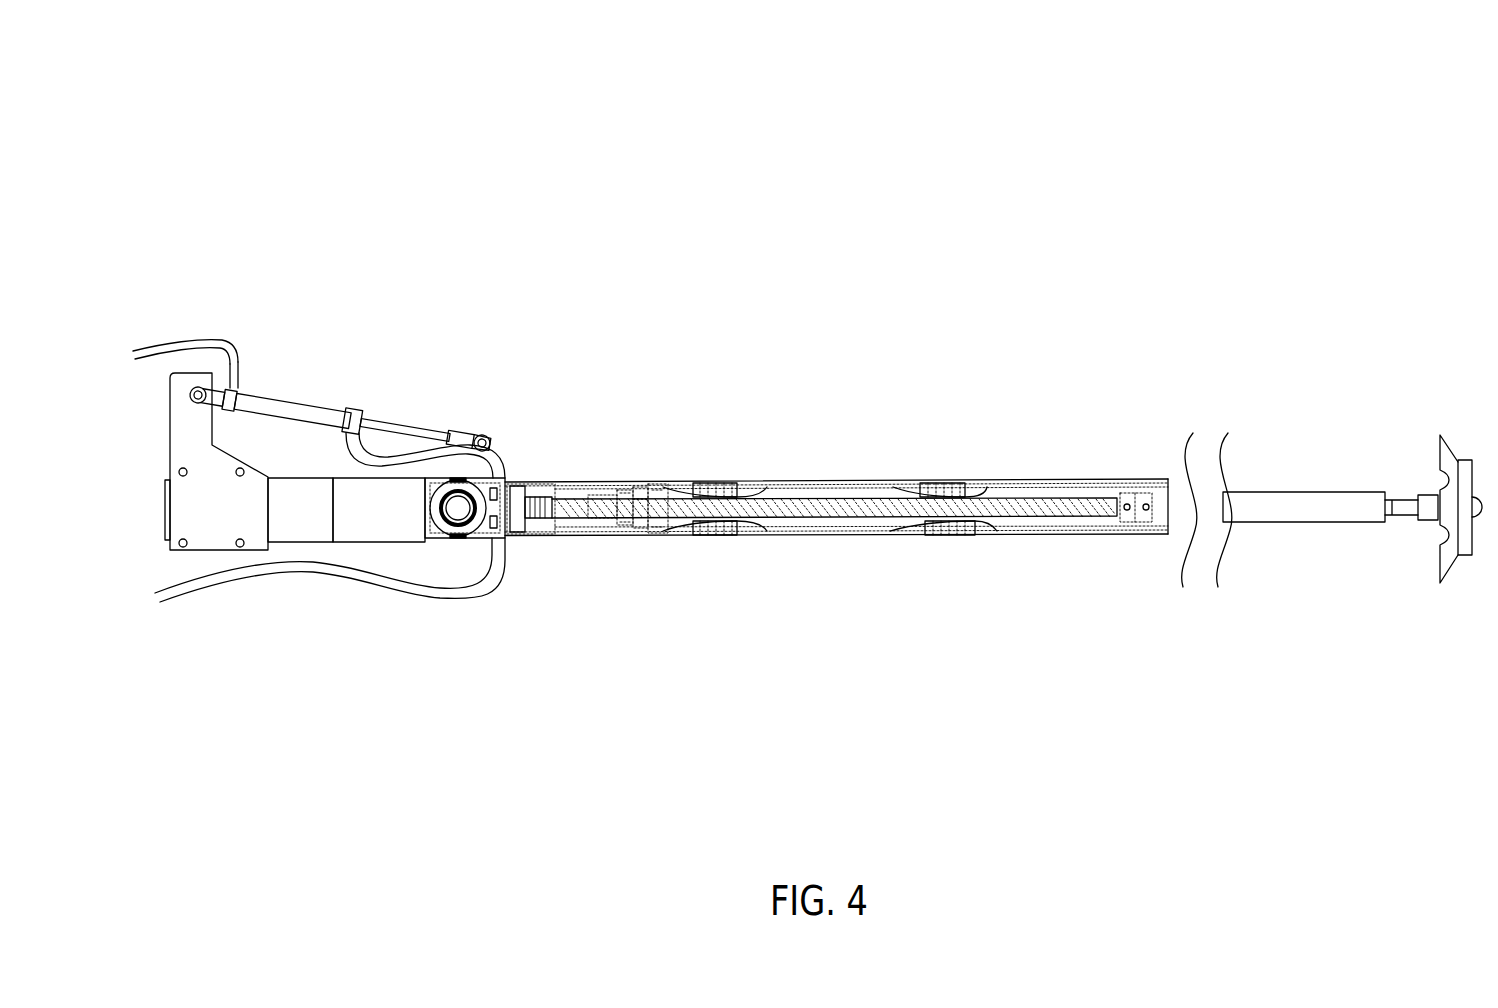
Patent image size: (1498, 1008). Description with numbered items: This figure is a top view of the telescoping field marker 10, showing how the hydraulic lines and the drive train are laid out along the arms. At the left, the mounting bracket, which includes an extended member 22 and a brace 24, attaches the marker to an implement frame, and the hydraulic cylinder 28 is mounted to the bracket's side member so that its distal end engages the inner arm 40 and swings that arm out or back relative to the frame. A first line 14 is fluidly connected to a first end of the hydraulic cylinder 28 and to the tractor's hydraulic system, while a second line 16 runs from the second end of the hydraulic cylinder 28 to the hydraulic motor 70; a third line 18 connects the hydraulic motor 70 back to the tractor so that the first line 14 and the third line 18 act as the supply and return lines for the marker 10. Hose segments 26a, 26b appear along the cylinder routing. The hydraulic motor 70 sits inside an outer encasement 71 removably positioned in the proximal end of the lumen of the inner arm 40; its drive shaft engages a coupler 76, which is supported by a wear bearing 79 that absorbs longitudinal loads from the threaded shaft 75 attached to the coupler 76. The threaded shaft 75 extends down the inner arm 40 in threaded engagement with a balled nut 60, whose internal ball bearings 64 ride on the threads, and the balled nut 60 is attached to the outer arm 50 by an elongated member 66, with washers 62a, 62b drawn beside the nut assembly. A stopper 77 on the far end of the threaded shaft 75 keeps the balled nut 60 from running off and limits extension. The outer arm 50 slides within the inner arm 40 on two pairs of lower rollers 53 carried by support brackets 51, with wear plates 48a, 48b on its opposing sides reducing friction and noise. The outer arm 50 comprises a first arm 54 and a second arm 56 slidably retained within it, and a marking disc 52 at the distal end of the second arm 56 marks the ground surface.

The telescoping field marker 10 is at (923, 168).
The first line 14 is at (150, 342).
The second line 16 is at (398, 457).
The third line 18 is at (358, 582).
The extended member 22 is at (283, 532).
The brace 24 is at (407, 532).
The hydraulic line 26a is at (192, 378).
The hydraulic line 26b is at (500, 455).
The hydraulic cylinder 28 is at (298, 400).
The inner arm 40 is at (823, 480).
The wear plate 48a is at (1067, 482).
The wear plate 48b is at (1066, 537).
The outer arm 50 is at (1288, 478).
The support brackets 51 is at (690, 482).
The marking disc 52 is at (1443, 580).
The lower rollers 53 is at (727, 482).
The first arm 54 is at (1172, 490).
The second arm 56 is at (1322, 502).
The balled nut 60 is at (593, 517).
The first washer 62a is at (645, 492).
The second washer 62b is at (647, 513).
The ball bearings 64 is at (613, 512).
The elongated member 66 is at (667, 520).
The hydraulic motor 70 is at (498, 522).
The outer encasement 71 is at (537, 483).
The threaded shaft 75 is at (833, 503).
The coupler 76 is at (552, 495).
The stopper 77 is at (1123, 522).
The wear bearing 79 is at (528, 520).